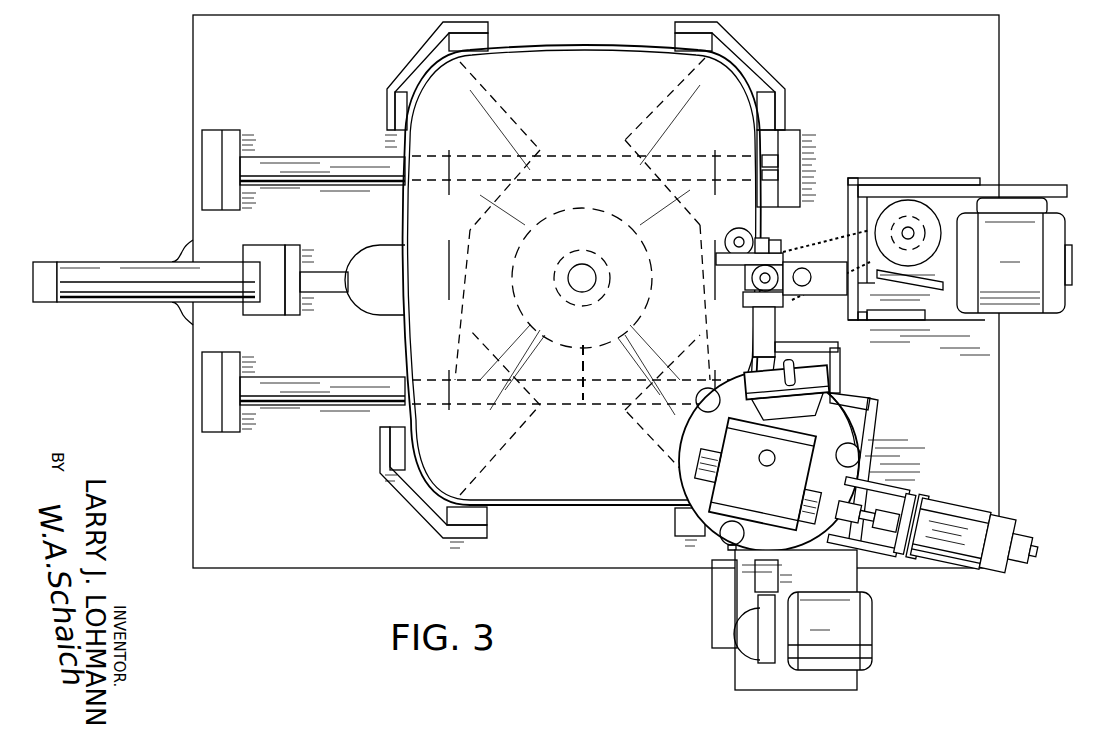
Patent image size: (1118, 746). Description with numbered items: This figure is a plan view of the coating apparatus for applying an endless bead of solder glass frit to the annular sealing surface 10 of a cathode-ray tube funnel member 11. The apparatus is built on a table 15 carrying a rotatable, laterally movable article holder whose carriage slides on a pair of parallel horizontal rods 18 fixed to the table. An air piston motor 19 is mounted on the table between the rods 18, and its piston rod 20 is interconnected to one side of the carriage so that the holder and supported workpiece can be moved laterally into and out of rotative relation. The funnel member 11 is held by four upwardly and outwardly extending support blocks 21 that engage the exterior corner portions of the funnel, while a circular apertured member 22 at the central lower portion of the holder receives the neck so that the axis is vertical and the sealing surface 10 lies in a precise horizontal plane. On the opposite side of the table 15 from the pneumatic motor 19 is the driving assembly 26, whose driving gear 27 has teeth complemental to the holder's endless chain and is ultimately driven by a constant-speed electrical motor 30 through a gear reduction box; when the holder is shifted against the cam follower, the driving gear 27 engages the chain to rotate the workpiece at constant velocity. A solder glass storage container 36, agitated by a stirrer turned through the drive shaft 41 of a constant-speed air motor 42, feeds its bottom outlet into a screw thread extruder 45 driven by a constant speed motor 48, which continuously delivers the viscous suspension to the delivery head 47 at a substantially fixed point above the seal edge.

The annular sealing surface 10 is at (533, 508).
The cathode-ray tube funnel member 11 is at (502, 325).
The table 15 is at (298, 570).
The horizontal rods 18 is at (330, 160).
The air piston motor 19 is at (95, 304).
The piston rod 20 is at (343, 292).
The support blocks 21 is at (393, 70).
The circular apertured member 22 is at (581, 391).
The driving assembly 26 is at (878, 172).
The driving gear 27 is at (797, 302).
The constant-speed electrical motor 30 is at (1035, 318).
The solder glass storage container 36 is at (706, 522).
The drive shaft 41 is at (878, 512).
The constant-speed air motor 42 is at (966, 556).
The screw thread extruder 45 is at (753, 330).
The delivery head 47 is at (755, 298).
The constant speed motor 48 is at (828, 665).